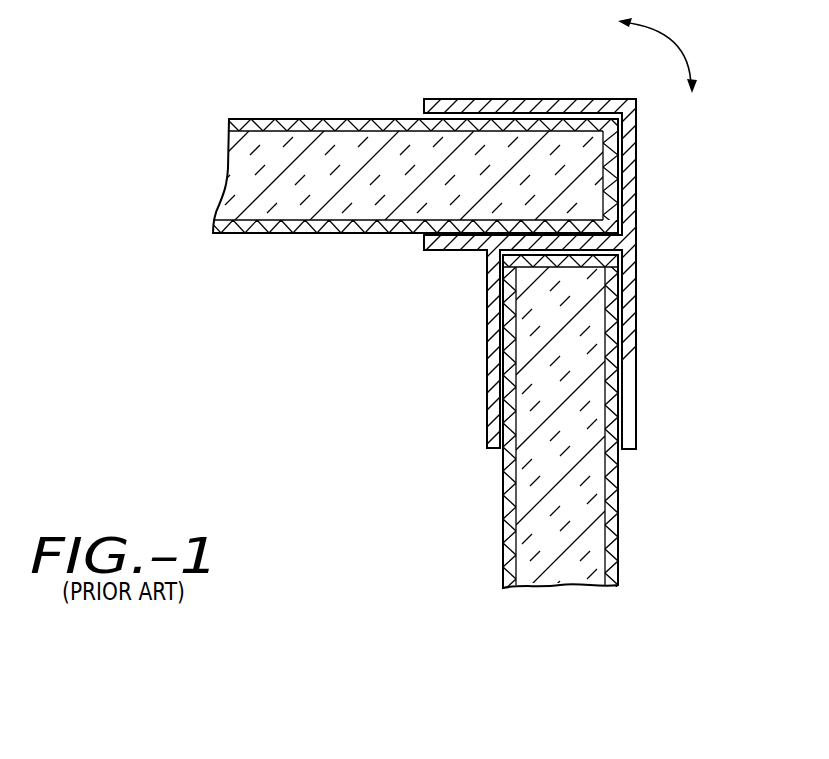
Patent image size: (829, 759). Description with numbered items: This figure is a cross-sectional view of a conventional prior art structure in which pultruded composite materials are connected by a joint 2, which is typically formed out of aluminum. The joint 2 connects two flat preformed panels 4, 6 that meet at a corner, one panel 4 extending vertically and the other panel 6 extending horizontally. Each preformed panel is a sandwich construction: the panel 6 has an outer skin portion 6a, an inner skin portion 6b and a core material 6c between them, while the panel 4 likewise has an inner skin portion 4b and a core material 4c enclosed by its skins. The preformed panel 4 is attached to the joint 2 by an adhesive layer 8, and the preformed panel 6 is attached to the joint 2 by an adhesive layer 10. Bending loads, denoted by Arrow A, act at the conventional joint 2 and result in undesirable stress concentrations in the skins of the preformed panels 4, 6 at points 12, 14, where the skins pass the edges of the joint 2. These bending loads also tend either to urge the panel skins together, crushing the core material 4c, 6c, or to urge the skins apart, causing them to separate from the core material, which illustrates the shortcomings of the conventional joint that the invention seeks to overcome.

The joint 2 is at (451, 293).
The preformed panel 4 is at (590, 425).
The inner skin portion 4b is at (503, 533).
The core material 4c is at (585, 548).
The preformed panel 6 is at (429, 166).
The outer skin portion 6a is at (360, 119).
The inner skin portion 6b is at (340, 233).
The core material 6c is at (263, 135).
The adhesive layer 8 is at (499, 330).
The adhesive layer 10 is at (444, 250).
The point of stress concentration 12 is at (620, 452).
The point of stress concentration 14 is at (413, 118).
The bending load arrow A is at (657, 55).